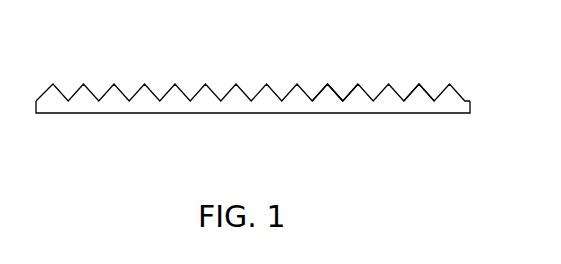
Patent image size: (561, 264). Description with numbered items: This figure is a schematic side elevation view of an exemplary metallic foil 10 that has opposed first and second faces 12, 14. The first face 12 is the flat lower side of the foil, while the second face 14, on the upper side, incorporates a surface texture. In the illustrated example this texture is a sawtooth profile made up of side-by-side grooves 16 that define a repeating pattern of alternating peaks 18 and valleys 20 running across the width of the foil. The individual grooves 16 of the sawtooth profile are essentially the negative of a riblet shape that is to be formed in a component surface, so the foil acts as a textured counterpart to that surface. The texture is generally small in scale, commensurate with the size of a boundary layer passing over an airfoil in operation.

The metallic foil 10 is at (253, 93).
The first face 12 is at (132, 114).
The second face 14 is at (138, 88).
The grooves 16 is at (412, 92).
The peaks 18 is at (343, 101).
The valleys 20 is at (343, 101).